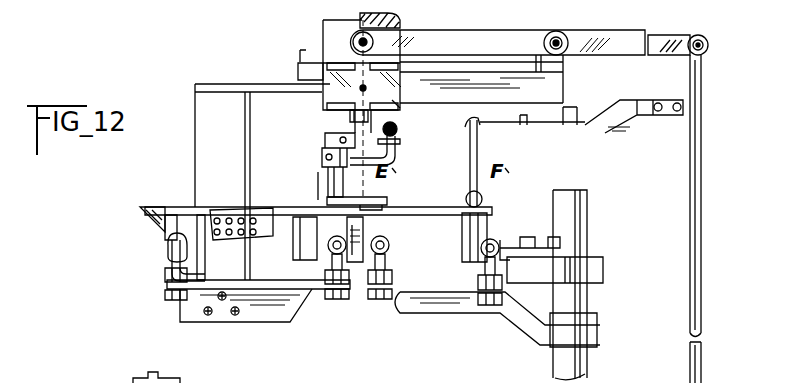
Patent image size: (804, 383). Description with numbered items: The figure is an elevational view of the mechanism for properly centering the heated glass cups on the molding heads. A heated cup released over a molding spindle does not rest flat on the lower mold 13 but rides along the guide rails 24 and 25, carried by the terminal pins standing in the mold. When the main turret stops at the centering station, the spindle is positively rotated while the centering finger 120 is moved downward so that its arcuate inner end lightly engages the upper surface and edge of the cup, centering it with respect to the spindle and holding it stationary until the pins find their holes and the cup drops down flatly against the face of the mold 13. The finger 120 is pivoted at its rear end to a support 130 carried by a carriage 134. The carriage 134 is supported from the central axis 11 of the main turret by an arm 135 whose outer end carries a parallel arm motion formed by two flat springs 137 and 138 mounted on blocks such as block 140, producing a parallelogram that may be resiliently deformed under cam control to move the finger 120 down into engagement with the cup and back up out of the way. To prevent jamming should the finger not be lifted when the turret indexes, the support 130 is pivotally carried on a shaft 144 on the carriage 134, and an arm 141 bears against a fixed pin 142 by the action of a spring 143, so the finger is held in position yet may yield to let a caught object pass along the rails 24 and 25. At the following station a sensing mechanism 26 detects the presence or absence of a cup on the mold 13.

The central axis 11 is at (322, 34).
The lower mold 13 is at (360, 12).
The guide rail 24 is at (180, 205).
The guide rail 25 is at (296, 205).
The sensing mechanism 26 is at (468, 195).
The centering finger 120 is at (318, 190).
The support 130 is at (327, 152).
The carriage 134 is at (348, 118).
The arm 135 is at (301, 58).
The flat spring 137 is at (298, 72).
The flat spring 138 is at (400, 106).
The block 140 is at (323, 103).
The arm 141 is at (393, 160).
The fixed pin 142 is at (400, 142).
The spring 143 is at (396, 131).
The shaft 144 is at (345, 133).